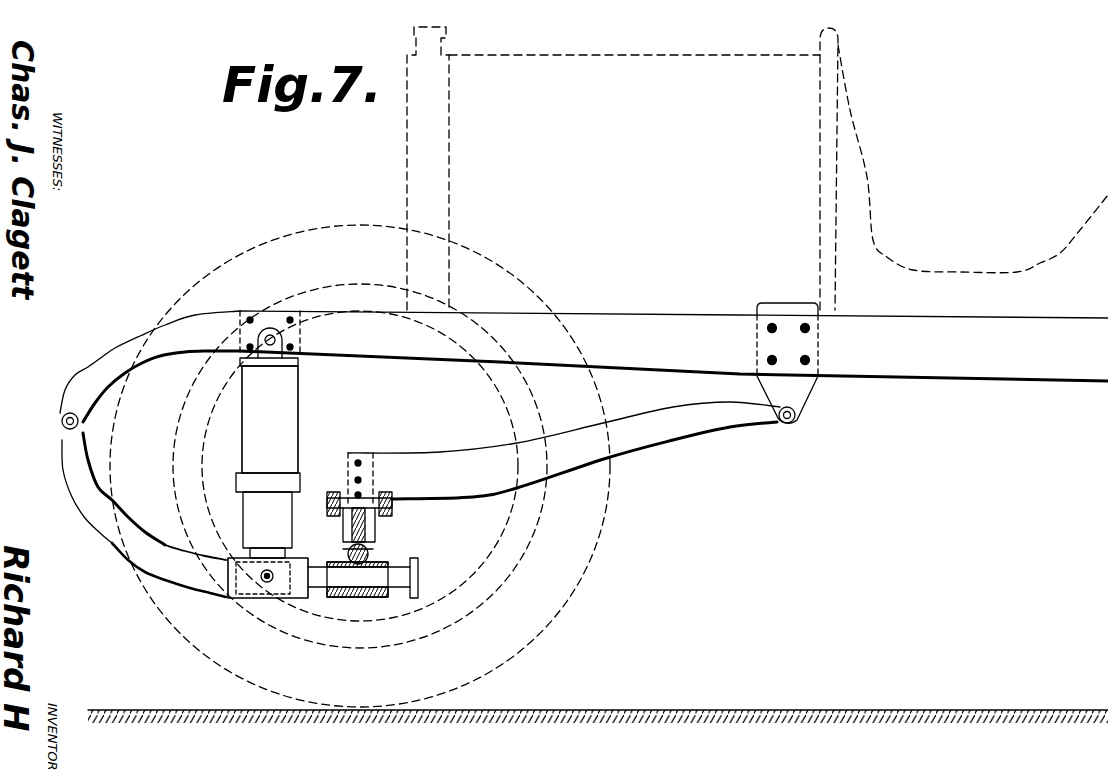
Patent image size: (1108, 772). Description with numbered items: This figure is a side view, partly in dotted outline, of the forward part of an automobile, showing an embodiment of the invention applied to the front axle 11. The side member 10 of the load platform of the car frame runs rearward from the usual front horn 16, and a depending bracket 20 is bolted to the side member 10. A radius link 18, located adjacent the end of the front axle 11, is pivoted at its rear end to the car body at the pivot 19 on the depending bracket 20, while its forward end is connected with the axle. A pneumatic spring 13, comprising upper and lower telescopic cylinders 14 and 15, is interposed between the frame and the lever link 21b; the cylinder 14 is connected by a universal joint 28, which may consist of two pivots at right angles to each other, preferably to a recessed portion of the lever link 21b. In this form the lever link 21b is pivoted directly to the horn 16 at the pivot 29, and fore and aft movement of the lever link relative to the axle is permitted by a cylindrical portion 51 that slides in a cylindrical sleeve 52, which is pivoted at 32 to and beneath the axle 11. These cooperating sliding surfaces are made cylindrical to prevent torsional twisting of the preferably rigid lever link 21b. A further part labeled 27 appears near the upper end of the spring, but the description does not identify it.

The side member 10 is at (560, 313).
The front axle 11 is at (389, 520).
The pneumatic spring 13 is at (291, 477).
The telescopic cylinder 14 is at (281, 401).
The telescopic cylinder 15 is at (267, 525).
The front horn 16 is at (90, 373).
The radius link 18 is at (662, 433).
The pivot 19 is at (785, 424).
The depending bracket 20 is at (800, 402).
The lever link 21b is at (93, 520).
The cylinder mounting bracket 27 is at (272, 336).
The universal joint 28 is at (262, 584).
The pivot 29 is at (62, 425).
The pivot 32 is at (372, 551).
The cylindrical portion 51 is at (420, 578).
The cylindrical sleeve 52 is at (359, 591).